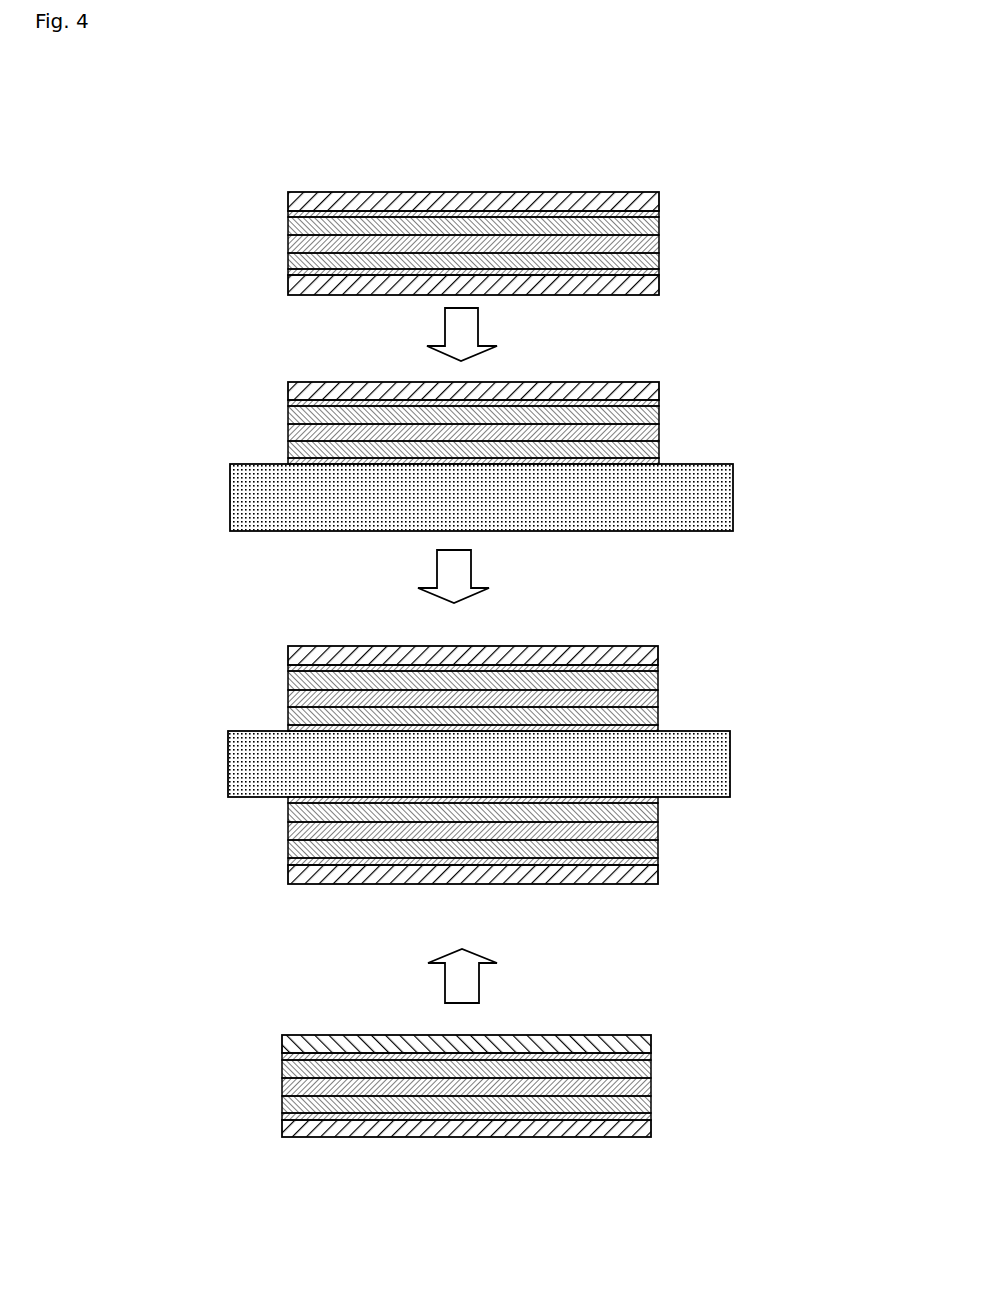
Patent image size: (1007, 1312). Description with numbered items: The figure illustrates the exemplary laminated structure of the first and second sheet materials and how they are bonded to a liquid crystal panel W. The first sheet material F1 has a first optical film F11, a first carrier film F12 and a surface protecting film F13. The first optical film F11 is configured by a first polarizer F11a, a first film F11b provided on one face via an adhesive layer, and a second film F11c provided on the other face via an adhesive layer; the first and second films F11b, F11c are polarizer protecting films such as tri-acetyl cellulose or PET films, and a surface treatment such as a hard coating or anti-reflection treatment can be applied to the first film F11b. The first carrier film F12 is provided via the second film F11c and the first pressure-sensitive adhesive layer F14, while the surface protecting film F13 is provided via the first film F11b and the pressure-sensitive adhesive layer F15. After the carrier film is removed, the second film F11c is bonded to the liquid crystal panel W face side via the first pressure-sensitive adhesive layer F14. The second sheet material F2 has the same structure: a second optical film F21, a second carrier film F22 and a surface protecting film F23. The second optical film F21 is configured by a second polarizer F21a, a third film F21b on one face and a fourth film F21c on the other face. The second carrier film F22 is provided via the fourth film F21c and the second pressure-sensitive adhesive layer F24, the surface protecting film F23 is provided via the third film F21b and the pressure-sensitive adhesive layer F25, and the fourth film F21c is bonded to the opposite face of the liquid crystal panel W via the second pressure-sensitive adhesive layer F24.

The first sheet material F1 is at (311, 178).
The first optical film F11 is at (173, 190).
The first polarizer F11a is at (288, 244).
The first film F11b is at (288, 227).
The second film F11c is at (288, 262).
The first carrier film F12 is at (659, 285).
The surface protecting film F13 is at (659, 200).
The first pressure-sensitive adhesive layer F14 is at (288, 272).
The pressure-sensitive adhesive layer F15 is at (659, 213).
The liquid crystal panel W is at (733, 497).
The second sheet material F2 is at (302, 910).
The second optical film F21 is at (183, 810).
The second polarizer F21a is at (288, 831).
The third film F21b is at (288, 849).
The fourth film F21c is at (288, 812).
The second carrier film F22 is at (651, 1042).
The surface protecting film F23 is at (658, 878).
The second pressure-sensitive adhesive layer F24 is at (658, 800).
The pressure-sensitive adhesive layer F25 is at (288, 862).